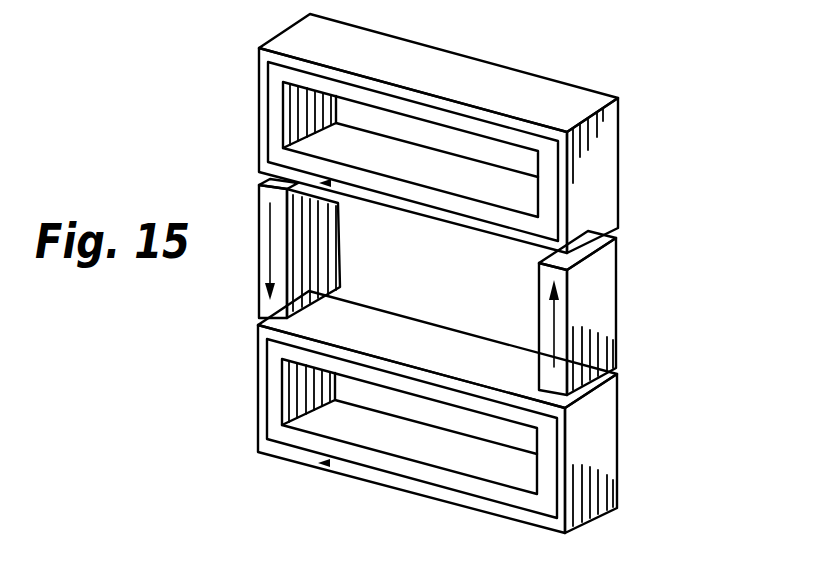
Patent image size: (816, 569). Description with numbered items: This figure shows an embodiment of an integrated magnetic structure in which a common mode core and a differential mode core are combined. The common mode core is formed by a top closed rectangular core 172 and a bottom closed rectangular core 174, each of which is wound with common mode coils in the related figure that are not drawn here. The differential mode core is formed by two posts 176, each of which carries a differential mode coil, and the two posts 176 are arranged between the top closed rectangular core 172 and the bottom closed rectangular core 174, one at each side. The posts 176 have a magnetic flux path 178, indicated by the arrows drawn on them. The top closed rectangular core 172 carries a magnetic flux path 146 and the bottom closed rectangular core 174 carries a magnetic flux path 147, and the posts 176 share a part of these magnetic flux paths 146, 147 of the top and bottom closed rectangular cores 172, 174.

The magnetic flux path 146 is at (262, 82).
The magnetic flux path 147 is at (262, 381).
The top closed rectangular core 172 is at (605, 185).
The bottom closed rectangular core 174 is at (607, 491).
The posts 176 is at (597, 273).
The magnetic flux path 178 is at (558, 337).